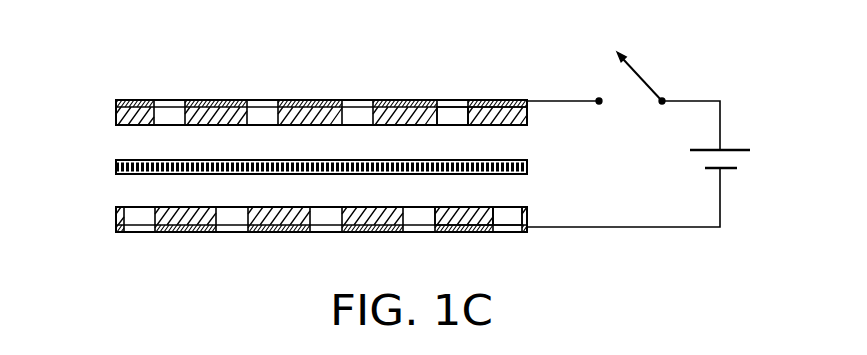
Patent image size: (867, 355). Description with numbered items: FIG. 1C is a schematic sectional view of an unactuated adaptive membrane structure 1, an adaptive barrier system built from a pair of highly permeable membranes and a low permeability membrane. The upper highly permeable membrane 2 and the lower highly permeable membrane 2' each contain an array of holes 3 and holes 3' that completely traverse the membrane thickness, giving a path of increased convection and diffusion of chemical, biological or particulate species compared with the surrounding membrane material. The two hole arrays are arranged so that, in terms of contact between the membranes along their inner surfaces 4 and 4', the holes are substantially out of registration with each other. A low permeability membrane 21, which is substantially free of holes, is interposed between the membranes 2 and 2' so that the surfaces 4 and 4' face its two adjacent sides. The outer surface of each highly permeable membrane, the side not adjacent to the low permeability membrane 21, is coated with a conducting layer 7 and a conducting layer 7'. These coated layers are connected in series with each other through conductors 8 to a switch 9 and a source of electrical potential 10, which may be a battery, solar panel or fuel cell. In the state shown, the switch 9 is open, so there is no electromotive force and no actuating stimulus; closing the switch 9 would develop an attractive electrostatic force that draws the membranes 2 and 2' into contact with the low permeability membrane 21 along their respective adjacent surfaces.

The electrochemical device 1 is at (185, 52).
The highly permeable membrane 2 is at (300, 112).
The membrane surface 4 is at (300, 130).
The holes 3 is at (460, 94).
The conducting layer 7 is at (505, 94).
The low permeability membrane 21 is at (116, 168).
The highly permeable membrane 2' is at (301, 219).
The membrane surface 4' is at (301, 204).
The holes 3' is at (522, 235).
The conducting layer 7' is at (464, 235).
The conductor 8 is at (560, 101).
The switch 9 is at (640, 72).
The source of electrical potential 10 is at (740, 148).